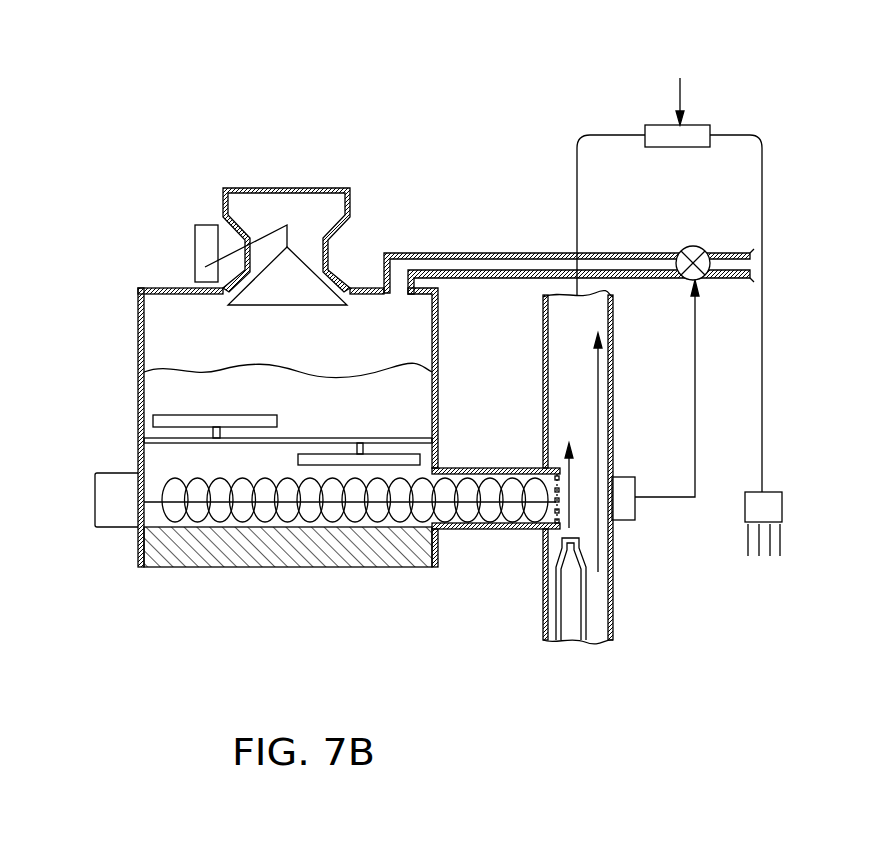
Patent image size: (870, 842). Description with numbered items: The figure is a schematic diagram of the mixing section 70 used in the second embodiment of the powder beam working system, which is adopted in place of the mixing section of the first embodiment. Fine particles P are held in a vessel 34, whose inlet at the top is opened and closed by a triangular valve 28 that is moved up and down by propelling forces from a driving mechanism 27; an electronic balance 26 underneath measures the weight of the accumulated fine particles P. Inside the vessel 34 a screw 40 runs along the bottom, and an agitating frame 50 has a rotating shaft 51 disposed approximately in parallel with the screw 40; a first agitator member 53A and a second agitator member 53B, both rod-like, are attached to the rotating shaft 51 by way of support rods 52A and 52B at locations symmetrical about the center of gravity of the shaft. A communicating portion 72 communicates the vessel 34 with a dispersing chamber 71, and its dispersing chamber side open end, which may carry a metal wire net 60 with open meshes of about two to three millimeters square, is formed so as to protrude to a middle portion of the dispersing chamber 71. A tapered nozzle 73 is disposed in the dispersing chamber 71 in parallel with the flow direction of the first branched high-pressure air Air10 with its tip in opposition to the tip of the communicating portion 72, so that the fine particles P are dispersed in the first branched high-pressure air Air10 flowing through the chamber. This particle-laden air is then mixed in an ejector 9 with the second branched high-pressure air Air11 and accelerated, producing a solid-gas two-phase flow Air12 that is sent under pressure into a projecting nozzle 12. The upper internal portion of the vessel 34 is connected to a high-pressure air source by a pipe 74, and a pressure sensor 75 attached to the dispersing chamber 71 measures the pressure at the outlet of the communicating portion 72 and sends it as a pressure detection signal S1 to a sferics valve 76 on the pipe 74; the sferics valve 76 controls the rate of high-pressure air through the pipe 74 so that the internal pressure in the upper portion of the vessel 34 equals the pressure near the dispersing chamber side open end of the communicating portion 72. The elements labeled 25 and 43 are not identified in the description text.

The ejector 9 is at (660, 124).
The projecting nozzle 12 is at (783, 505).
The hopper 25 is at (352, 190).
The electronic balance 26 is at (388, 567).
The driving mechanism 27 is at (195, 247).
The triangular valve 28 is at (341, 285).
The vessel 34 is at (138, 312).
The screw 40 is at (188, 527).
The inlet 43 is at (110, 513).
The agitating frame 50 is at (400, 395).
The rotating shaft 51 is at (437, 428).
The support rod 52A is at (150, 440).
The support rod 52B is at (365, 450).
The first agitator member 53A is at (153, 414).
The second agitator member 53B is at (425, 458).
The metal wire net 60 is at (560, 465).
The mixing section 70 is at (742, 625).
The dispersing chamber 71 is at (612, 613).
The communicating portion 72 is at (490, 531).
The tapered nozzle 73 is at (557, 623).
The pipe 74 is at (460, 253).
The pressure sensor 75 is at (636, 520).
The sferics valve 76 is at (682, 278).
The fine particles P is at (152, 394).
The pressure detection signal S1 is at (695, 395).
The first branched high-pressure air Air10 is at (597, 568).
The second branched high-pressure air Air11 is at (680, 85).
The solid-gas two-phase flow Air12 is at (762, 190).